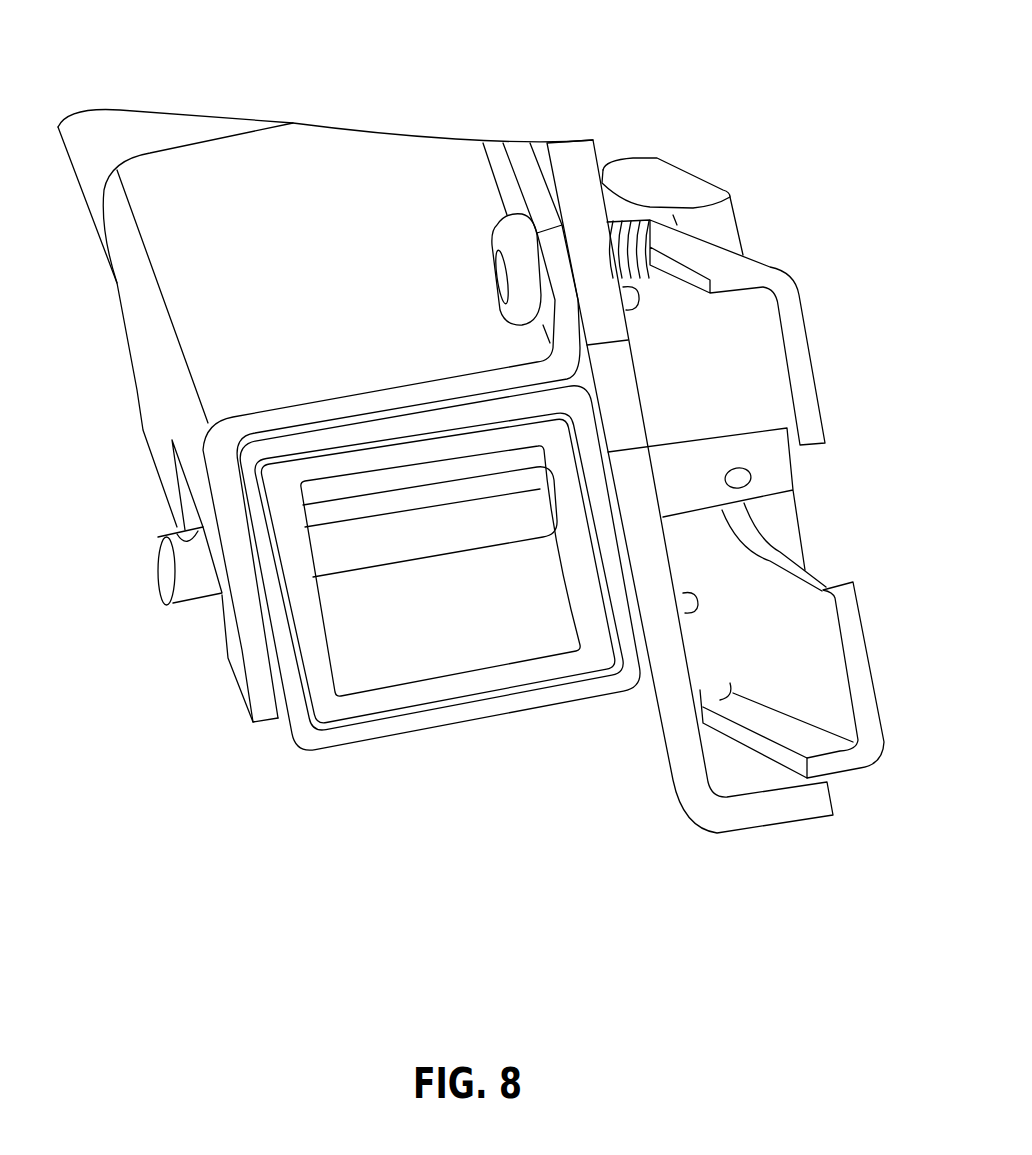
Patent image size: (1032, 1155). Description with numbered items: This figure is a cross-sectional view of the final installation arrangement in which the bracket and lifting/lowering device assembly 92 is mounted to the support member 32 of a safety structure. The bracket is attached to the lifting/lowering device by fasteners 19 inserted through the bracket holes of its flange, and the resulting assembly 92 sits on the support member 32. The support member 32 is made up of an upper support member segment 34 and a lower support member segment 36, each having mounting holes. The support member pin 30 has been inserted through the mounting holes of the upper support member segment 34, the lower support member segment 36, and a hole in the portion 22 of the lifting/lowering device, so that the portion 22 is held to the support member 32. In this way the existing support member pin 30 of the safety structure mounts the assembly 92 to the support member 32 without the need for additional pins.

The fastener 19 is at (500, 222).
The portion of the lifting/lowering device 22 is at (712, 813).
The support member pin 30 is at (158, 573).
The support member 32 is at (440, 627).
The upper support member segment 34 is at (306, 744).
The lower support member segment 36 is at (388, 706).
The bracket and lifting/lowering device assembly 92 is at (772, 160).